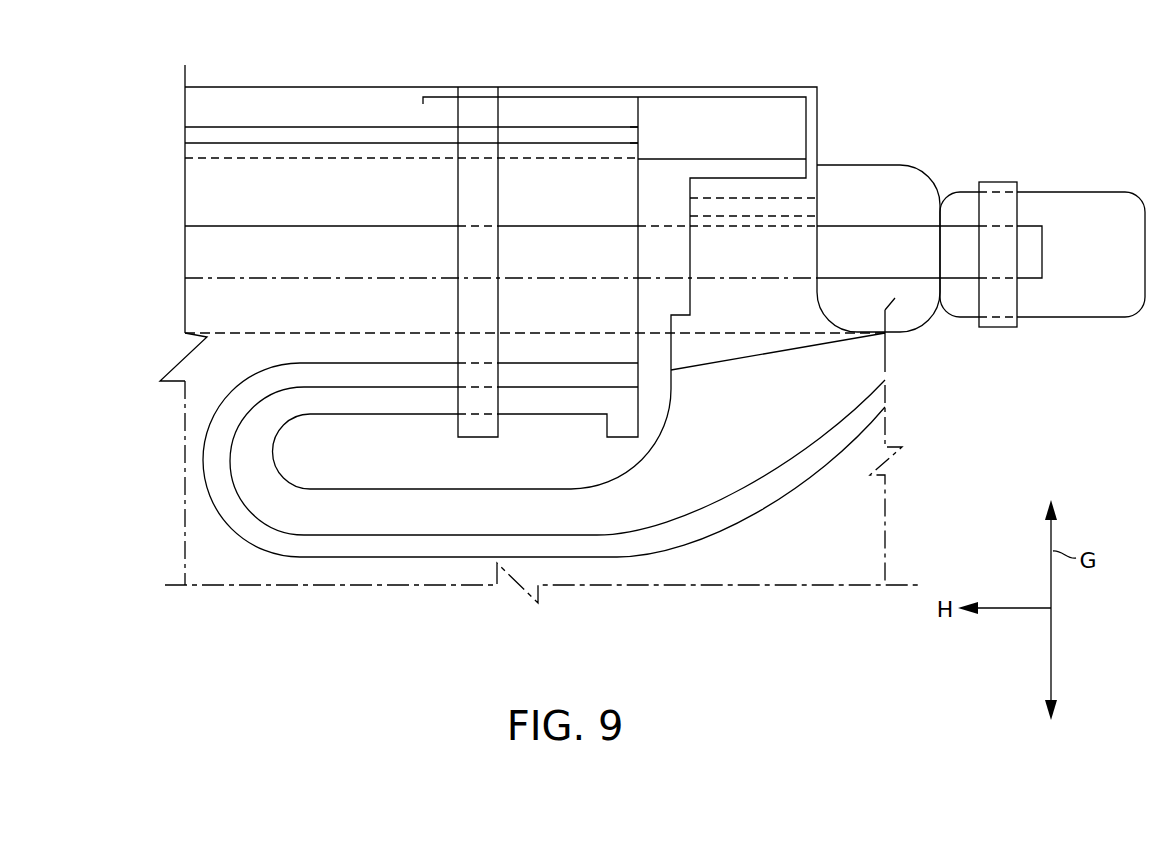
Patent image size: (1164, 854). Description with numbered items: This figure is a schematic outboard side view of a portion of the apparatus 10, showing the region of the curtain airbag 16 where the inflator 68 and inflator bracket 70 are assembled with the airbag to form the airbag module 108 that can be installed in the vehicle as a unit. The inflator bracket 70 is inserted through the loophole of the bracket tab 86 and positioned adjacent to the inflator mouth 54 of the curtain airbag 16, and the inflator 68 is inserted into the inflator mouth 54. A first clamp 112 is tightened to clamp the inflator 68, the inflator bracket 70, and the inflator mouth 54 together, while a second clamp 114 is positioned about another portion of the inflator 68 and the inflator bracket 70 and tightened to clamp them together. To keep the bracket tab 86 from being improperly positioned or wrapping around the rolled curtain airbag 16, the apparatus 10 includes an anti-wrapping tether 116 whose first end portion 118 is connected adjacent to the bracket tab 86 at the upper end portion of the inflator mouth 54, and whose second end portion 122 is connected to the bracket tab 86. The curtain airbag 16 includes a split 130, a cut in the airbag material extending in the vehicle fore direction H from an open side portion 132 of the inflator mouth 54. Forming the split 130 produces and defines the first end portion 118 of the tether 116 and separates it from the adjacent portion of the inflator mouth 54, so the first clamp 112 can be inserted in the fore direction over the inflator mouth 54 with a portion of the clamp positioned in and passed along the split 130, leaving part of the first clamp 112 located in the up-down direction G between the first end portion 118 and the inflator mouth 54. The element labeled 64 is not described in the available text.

The apparatus 10 is at (911, 58).
The curtain airbag 16 is at (850, 513).
The inflator mouth 54 is at (272, 96).
The flange 64 is at (641, 152).
The inflator 68 is at (1073, 196).
The inflator bracket 70 is at (901, 238).
The bracket tab 86 is at (787, 240).
The airbag module 108 is at (805, 34).
The first clamp 112 is at (483, 192).
The second clamp 114 is at (993, 180).
The anti-wrapping tether 116 is at (692, 92).
The first end portion 118 is at (457, 95).
The second end portion 122 is at (818, 115).
The split 130 is at (566, 97).
The open side portion 132 is at (640, 110).